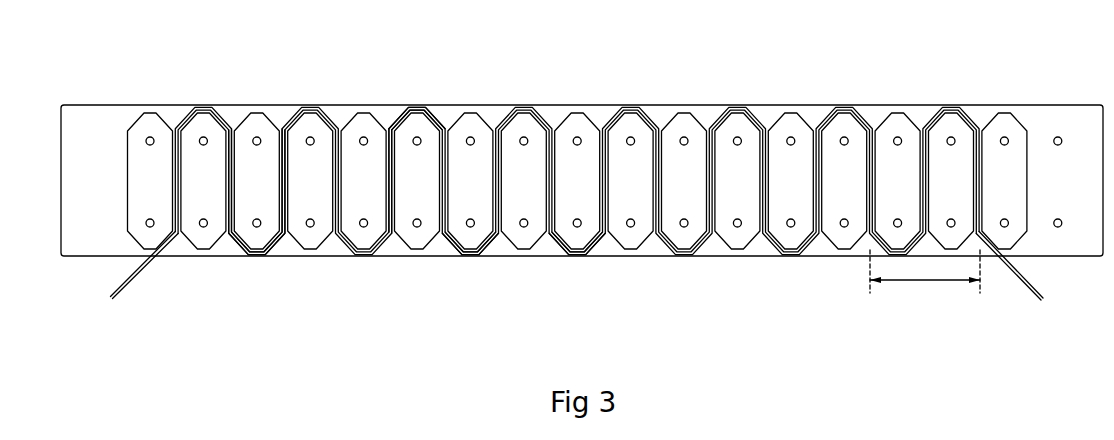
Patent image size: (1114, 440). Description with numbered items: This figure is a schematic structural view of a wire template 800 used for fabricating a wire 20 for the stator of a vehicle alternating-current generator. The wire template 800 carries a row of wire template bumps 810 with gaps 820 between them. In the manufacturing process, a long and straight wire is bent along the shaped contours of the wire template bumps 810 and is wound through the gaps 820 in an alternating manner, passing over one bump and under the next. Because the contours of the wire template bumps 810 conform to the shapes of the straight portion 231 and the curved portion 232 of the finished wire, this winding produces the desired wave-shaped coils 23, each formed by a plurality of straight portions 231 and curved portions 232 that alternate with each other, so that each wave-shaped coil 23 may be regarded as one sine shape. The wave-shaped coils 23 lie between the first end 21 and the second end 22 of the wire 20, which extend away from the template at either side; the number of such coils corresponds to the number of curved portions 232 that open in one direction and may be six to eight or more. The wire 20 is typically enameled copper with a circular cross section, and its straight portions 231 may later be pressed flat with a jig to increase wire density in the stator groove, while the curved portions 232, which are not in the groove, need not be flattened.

The wire template 800 is at (1038, 105).
The wire template bumps 810 is at (265, 233).
The gaps 820 is at (228, 232).
The wire 20 is at (742, 110).
The first end 21 is at (123, 288).
The second end 22 is at (1027, 285).
The wave-shaped coil 23 is at (927, 282).
The straight portion 231 is at (389, 157).
The curved portion 232 is at (425, 108).